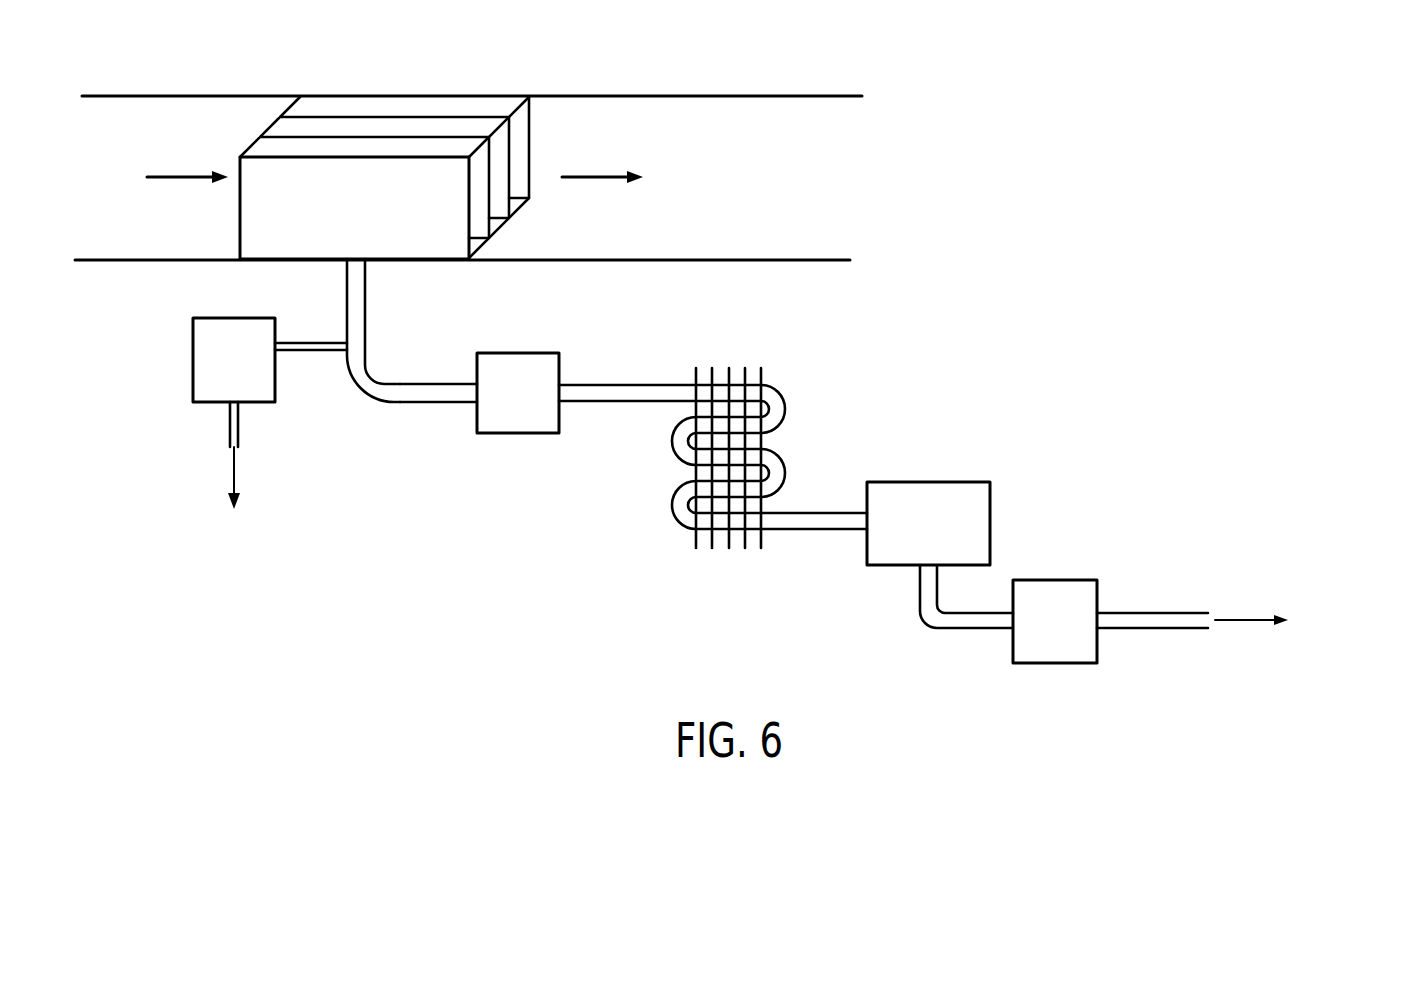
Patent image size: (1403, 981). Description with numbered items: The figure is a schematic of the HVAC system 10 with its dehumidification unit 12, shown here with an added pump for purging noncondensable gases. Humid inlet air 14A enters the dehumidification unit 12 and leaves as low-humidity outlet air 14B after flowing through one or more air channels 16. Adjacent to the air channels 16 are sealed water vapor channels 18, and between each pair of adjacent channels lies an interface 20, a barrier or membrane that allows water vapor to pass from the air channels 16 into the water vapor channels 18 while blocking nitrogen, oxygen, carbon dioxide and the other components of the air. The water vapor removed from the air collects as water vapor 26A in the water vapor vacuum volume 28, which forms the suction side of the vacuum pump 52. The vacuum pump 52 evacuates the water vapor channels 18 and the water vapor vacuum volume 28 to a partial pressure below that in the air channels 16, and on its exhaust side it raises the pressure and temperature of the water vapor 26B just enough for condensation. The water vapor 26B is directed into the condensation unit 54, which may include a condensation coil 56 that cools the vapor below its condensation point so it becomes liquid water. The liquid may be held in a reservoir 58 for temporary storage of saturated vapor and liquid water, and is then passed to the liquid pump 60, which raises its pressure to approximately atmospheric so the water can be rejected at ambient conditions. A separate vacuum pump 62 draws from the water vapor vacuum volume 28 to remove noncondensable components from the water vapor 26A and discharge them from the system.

The HVAC system 10 is at (1013, 176).
The dehumidification unit 12 is at (224, 232).
The inlet air 14A is at (178, 176).
The outlet air 14B is at (597, 177).
The air channels 16 is at (520, 137).
The water vapor channels 18 is at (500, 178).
The interface 20 is at (338, 135).
The water vapor in the water vapor vacuum volume 26A is at (422, 403).
The water vapor expelled from the vacuum pump 26B is at (643, 405).
The water vapor vacuum volume 28 is at (375, 372).
The vacuum pump 52 is at (517, 353).
The condensation unit 54 is at (797, 406).
The condensation coil 56 is at (670, 503).
The reservoir 58 is at (928, 482).
The liquid pump 60 is at (1053, 580).
The vacuum pump 62 is at (192, 360).